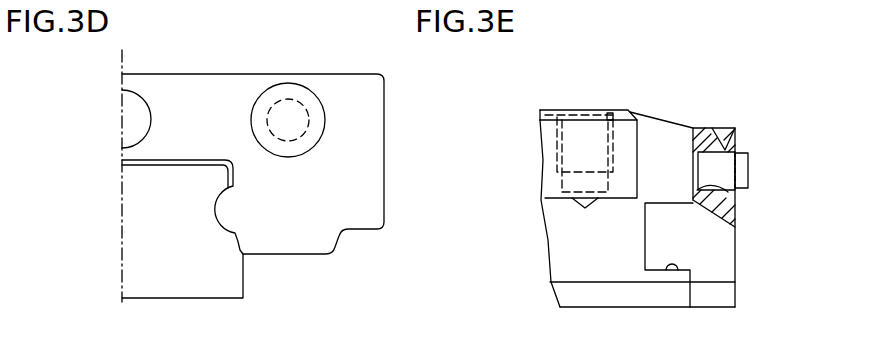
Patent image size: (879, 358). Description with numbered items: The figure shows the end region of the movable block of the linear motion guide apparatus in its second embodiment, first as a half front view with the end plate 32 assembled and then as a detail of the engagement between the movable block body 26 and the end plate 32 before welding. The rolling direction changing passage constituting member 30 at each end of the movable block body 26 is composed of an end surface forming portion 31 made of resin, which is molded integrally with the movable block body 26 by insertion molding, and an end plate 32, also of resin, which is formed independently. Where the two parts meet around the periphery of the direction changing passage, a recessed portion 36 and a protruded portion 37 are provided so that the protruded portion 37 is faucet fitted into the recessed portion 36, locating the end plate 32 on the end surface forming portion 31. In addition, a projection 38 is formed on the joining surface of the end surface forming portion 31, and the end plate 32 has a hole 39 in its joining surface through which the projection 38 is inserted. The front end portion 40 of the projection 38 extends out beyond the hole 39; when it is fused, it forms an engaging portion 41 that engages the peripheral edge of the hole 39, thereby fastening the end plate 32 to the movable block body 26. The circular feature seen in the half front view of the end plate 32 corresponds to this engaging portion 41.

In FIG. 3E, the movable block body 26 is at (570, 108).
In FIG. 3E, the rolling direction changing passage constituting member 30 is at (623, 59).
In FIG. 3E, the end surface forming portion 31 is at (653, 140).
In FIG. 3D, the end plate 32 is at (384, 172).
In FIG. 3E, the end plate 32 is at (707, 128).
In FIG. 3E, the recessed portion 36 is at (667, 266).
In FIG. 3E, the protruded portion 37 is at (648, 242).
In FIG. 3E, the projection 38 is at (730, 150).
In FIG. 3E, the hole 39 is at (733, 190).
In FIG. 3E, the front end portion 40 is at (742, 168).
In FIG. 3D, the engaging portion 41 is at (322, 118).
In FIG. 3E, the engaging portion 41 is at (737, 128).